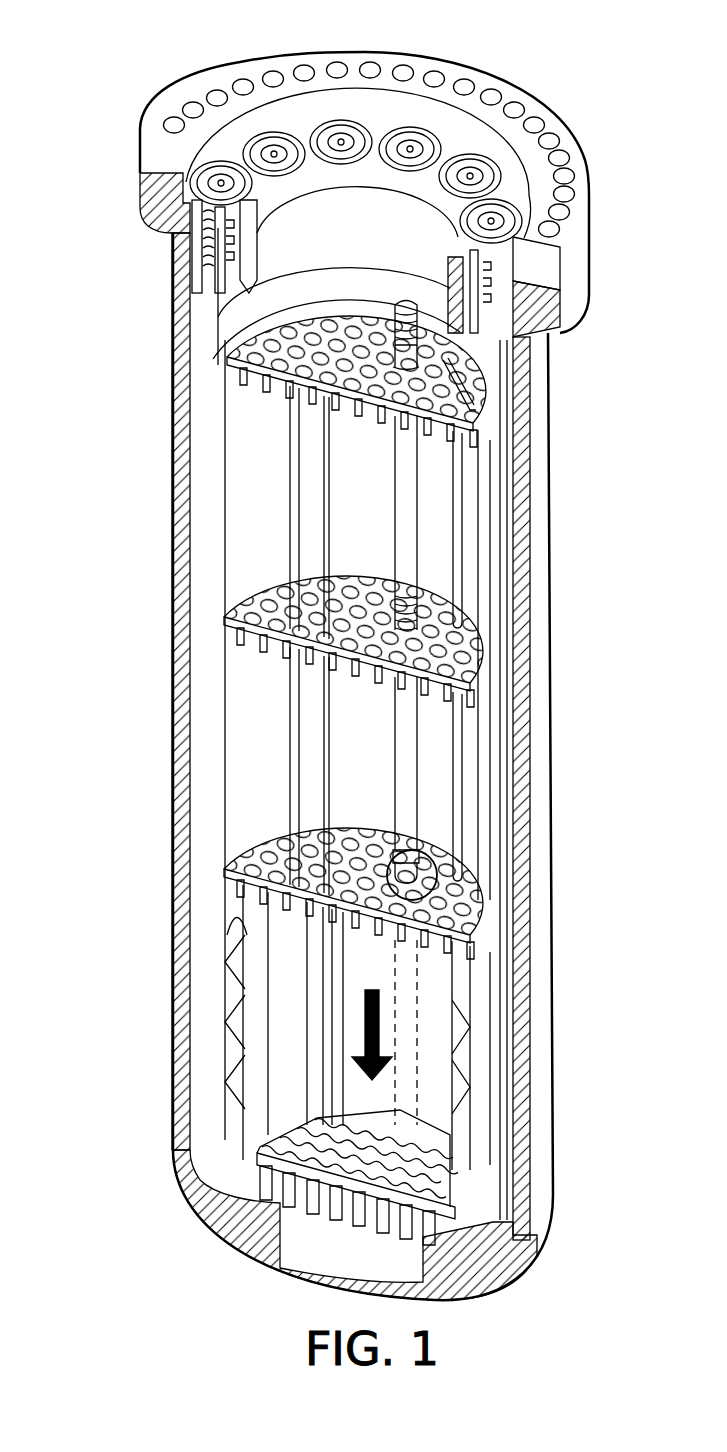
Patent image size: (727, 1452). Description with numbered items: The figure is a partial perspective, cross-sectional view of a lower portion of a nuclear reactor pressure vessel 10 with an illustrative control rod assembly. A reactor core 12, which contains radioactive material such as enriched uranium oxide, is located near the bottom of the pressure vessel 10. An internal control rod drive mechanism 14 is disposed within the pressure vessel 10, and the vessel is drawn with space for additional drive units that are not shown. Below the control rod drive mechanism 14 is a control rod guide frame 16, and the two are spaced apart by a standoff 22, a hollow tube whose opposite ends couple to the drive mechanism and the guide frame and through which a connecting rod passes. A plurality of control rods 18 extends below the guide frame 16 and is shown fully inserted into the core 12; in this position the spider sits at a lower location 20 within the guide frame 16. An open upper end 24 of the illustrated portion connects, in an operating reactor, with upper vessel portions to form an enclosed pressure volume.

The nuclear reactor pressure vessel 10 is at (172, 470).
The reactor core 12 is at (207, 1168).
The control rod drive mechanism 14 is at (425, 506).
The control rod guide frame 16 is at (426, 780).
The control rods 18 is at (414, 1015).
The lower location 20 is at (436, 865).
The standoff 22 is at (418, 598).
The open upper end 24 is at (355, 237).